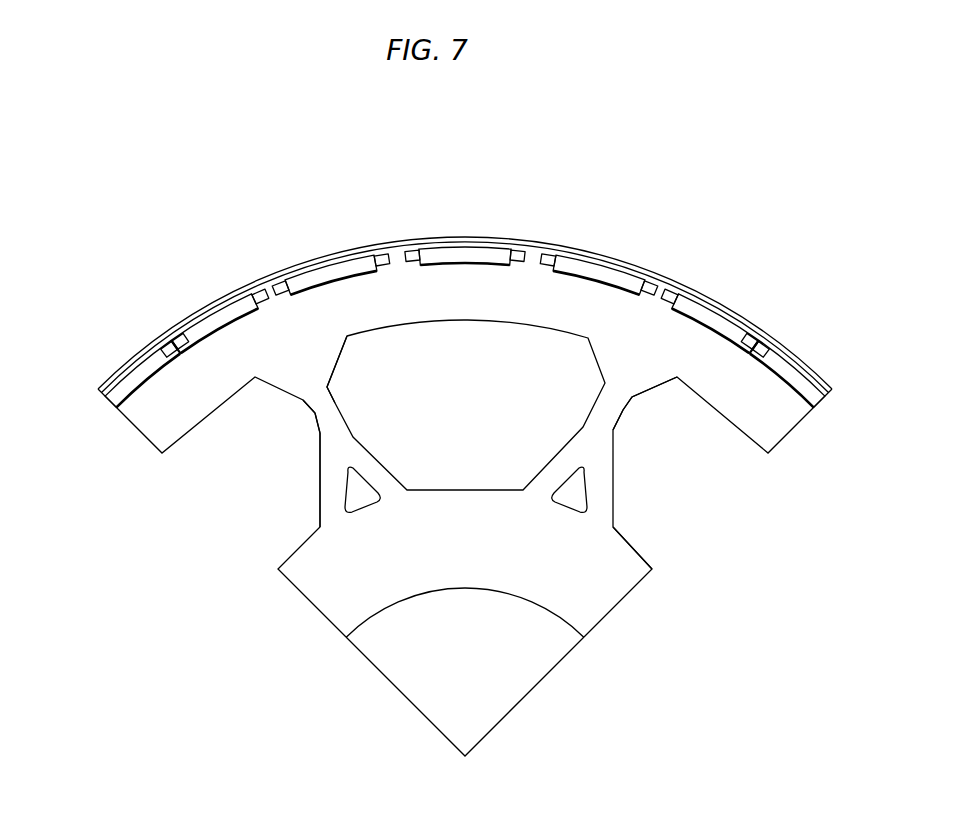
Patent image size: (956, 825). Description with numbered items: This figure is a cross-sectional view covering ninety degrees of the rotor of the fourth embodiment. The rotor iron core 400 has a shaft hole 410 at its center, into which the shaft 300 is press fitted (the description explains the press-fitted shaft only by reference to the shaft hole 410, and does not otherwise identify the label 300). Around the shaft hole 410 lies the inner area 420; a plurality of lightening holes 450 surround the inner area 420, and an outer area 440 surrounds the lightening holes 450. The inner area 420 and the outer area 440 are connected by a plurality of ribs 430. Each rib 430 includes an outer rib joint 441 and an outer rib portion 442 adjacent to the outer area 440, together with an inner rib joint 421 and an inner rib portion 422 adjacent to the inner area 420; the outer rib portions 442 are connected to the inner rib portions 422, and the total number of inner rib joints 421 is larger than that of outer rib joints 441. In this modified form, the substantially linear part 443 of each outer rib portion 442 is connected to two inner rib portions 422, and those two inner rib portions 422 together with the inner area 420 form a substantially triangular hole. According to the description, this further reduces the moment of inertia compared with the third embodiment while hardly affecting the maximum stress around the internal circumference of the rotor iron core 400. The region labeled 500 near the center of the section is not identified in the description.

The housing 300 is at (177, 303).
The rotor iron core 400 is at (283, 320).
The shaft hole 410 is at (355, 630).
The inner area 420 is at (562, 573).
The inner rib joint 421 is at (325, 523).
The inner rib portion 422 is at (330, 492).
The rib 430 is at (600, 427).
The outer area 440 is at (673, 343).
The outer rib joint 441 is at (328, 362).
The outer rib portion 442 is at (313, 412).
The substantially linear part 443 is at (323, 425).
The lightening holes 450 is at (360, 498).
The rotor 500 is at (450, 710).